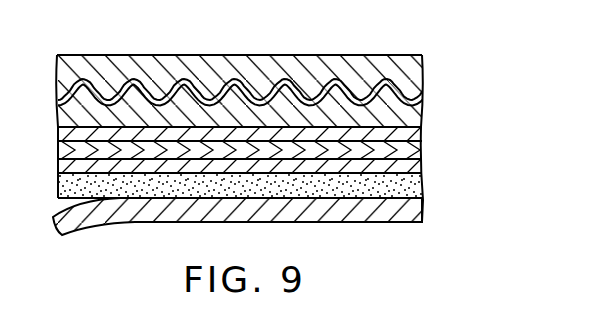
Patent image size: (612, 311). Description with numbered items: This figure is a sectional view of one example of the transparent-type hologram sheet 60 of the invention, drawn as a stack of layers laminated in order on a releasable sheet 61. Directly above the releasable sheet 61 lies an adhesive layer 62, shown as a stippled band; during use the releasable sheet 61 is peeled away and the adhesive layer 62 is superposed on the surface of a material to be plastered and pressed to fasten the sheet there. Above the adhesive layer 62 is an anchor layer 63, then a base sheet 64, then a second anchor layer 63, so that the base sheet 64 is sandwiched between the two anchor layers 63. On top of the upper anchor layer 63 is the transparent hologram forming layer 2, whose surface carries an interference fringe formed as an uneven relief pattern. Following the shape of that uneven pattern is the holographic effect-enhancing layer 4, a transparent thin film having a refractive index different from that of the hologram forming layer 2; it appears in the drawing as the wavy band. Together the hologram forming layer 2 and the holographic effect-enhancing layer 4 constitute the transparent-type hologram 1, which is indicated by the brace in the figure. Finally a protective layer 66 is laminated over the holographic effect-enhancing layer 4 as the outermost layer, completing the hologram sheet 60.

The hologram sheet 60 is at (283, 136).
The protective layer 66 is at (407, 73).
The holographic effect-enhancing layer 4 is at (412, 105).
The hologram forming layer 2 is at (405, 124).
The transparent-type hologram 1 is at (283, 85).
The anchor layer 63 is at (412, 135).
The base sheet 64 is at (413, 153).
The adhesive layer 62 is at (413, 188).
The releasable sheet 61 is at (410, 215).